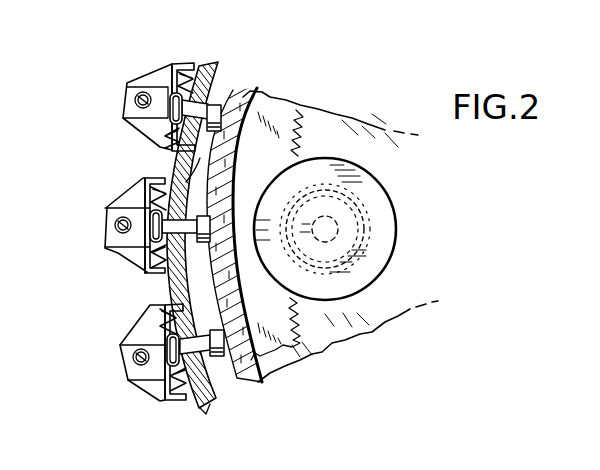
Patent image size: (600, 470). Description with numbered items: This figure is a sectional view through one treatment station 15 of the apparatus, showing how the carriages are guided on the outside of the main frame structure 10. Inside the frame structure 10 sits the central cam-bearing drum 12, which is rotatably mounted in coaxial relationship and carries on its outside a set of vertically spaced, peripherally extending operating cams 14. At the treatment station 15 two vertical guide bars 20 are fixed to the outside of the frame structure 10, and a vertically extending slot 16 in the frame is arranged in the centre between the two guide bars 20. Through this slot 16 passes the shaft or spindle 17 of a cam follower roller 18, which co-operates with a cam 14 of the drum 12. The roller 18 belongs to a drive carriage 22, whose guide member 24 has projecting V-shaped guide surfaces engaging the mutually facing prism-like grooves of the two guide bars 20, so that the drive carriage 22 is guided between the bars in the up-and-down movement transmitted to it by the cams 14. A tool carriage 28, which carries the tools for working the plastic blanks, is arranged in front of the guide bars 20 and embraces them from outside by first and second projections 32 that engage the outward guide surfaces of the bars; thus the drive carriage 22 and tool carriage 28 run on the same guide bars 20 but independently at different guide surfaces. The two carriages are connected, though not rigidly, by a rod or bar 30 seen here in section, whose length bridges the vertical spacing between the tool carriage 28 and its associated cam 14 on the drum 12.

The main frame structure 10 is at (207, 67).
The central cam-bearing drum 12 is at (247, 100).
The operating cams 14 is at (246, 388).
The treatment stations 15 is at (150, 65).
The vertically extending slots 16 is at (213, 90).
The shaft or spindle 17 is at (208, 396).
The cam follower roller 18 is at (168, 164).
The guide bars 20 is at (150, 328).
The drive carriage 22 is at (136, 98).
The guide member 24 is at (133, 250).
The tool carriage 28 is at (143, 72).
The rod or bar 30 is at (136, 107).
The projections 32 is at (185, 65).